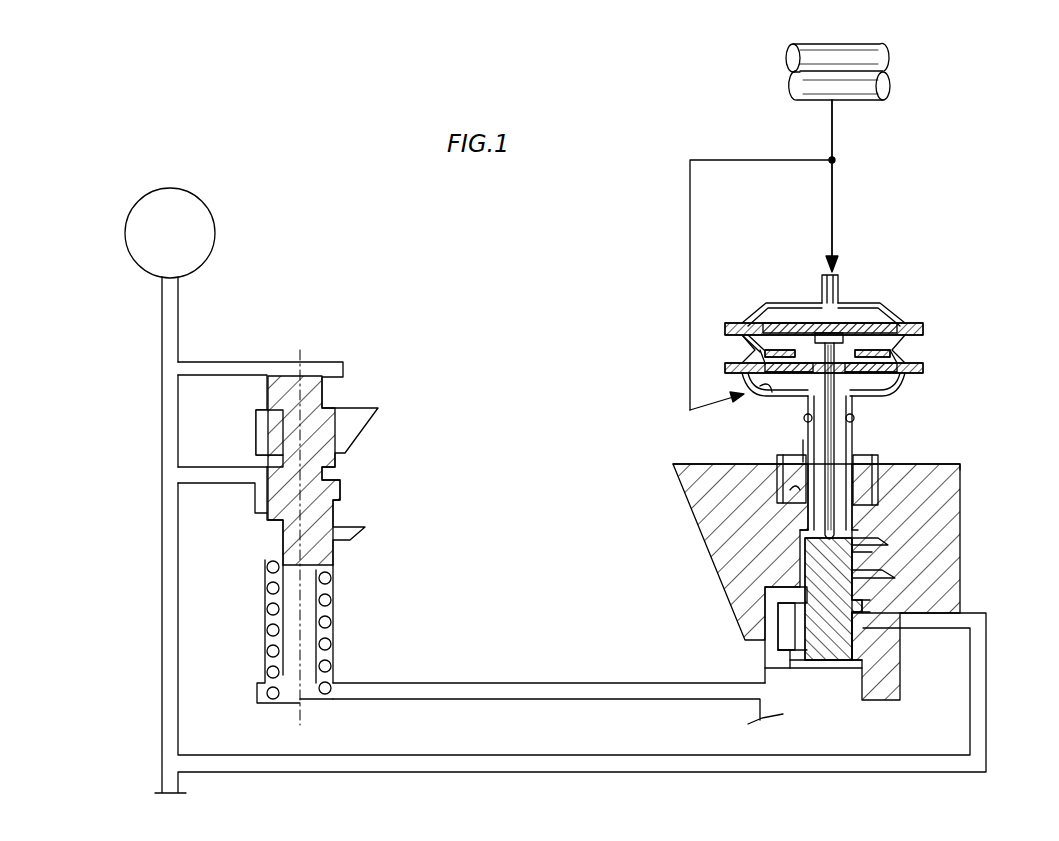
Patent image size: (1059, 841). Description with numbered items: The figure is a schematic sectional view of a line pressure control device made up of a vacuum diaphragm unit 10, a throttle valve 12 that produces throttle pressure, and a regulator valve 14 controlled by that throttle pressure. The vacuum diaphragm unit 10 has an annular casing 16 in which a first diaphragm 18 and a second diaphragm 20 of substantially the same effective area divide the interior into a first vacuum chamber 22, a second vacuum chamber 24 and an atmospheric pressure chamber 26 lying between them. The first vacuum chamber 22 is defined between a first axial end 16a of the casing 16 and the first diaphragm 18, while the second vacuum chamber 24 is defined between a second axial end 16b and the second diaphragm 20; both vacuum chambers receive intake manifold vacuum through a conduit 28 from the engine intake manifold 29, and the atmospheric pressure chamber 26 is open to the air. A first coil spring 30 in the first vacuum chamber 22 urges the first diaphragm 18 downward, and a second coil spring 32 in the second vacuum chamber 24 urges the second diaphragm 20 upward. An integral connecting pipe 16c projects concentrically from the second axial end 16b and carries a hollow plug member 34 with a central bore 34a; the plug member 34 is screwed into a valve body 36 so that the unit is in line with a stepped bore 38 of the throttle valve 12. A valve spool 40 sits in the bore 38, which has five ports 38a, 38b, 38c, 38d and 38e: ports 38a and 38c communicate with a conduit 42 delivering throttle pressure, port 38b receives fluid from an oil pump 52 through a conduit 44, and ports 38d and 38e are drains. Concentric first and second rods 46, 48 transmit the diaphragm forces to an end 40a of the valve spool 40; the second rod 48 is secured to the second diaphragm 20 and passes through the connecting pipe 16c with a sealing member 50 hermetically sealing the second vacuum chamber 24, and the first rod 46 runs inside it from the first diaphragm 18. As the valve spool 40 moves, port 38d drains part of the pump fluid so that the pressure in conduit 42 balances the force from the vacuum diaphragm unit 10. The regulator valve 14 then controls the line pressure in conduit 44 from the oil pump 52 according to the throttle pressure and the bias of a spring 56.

The vacuum diaphragm unit 10 is at (922, 296).
The throttle valve 12 is at (736, 584).
The regulator valve 14 is at (288, 326).
The annular casing 16 is at (748, 304).
The first axial end 16a is at (786, 306).
The second axial end 16b is at (774, 404).
The connecting pipe 16c is at (854, 444).
The first diaphragm 18 is at (888, 318).
The second diaphragm 20 is at (900, 386).
The first vacuum chamber 22 is at (814, 278).
The second vacuum chamber 24 is at (890, 400).
The atmospheric pressure chamber 26 is at (893, 345).
The conduit 28 is at (836, 128).
The engine intake manifold 29 is at (878, 60).
The first coil spring 30 is at (847, 306).
The second coil spring 32 is at (802, 420).
The plug member 34 is at (880, 463).
The central bore 34a is at (794, 494).
The valve body 36 is at (958, 466).
The stepped bore 38 is at (868, 612).
The port 38a is at (856, 668).
The port 38b is at (870, 622).
The port 38c is at (872, 605).
The drain port 38d is at (892, 580).
The drain port 38e is at (880, 541).
The valve spool 40 is at (822, 668).
The end of valve spool 40a is at (872, 553).
The conduit 42 is at (442, 682).
The conduit 44 is at (160, 416).
The first rod 46 is at (840, 522).
The second rod 48 is at (804, 442).
The sealing member 50 is at (855, 420).
The oil pump 52 is at (136, 270).
The spring 56 is at (268, 636).